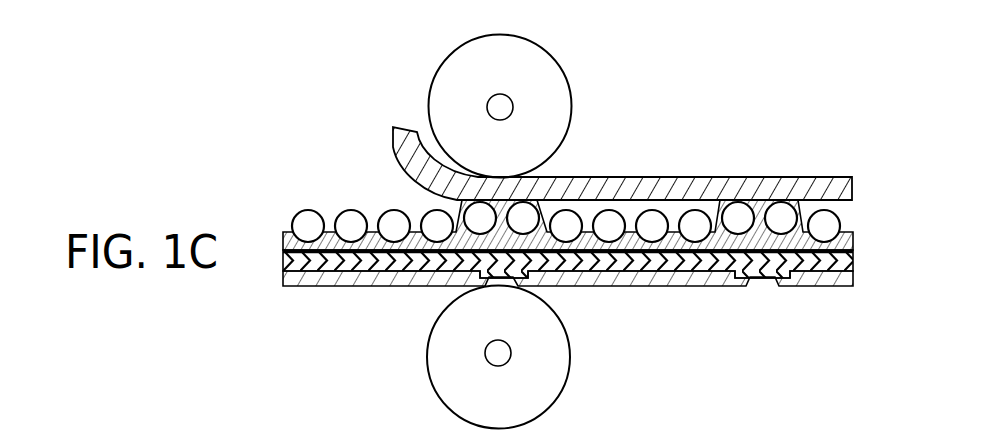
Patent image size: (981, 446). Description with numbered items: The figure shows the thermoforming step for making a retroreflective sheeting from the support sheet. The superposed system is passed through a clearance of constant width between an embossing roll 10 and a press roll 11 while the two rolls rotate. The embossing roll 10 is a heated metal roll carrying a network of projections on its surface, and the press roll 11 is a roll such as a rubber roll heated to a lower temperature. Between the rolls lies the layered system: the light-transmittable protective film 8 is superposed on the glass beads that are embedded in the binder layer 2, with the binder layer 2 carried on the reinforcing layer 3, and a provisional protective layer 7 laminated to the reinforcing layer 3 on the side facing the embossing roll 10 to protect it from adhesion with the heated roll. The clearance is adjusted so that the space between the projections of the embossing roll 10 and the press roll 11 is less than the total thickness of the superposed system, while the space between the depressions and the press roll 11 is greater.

The press roll 11 is at (556, 98).
The embossing roll 10 is at (548, 385).
The light-transmittable protective film 8 is at (843, 185).
The binder layer 2 is at (848, 240).
The reinforcing layer 3 is at (853, 265).
The provisional protective layer 7 is at (850, 284).